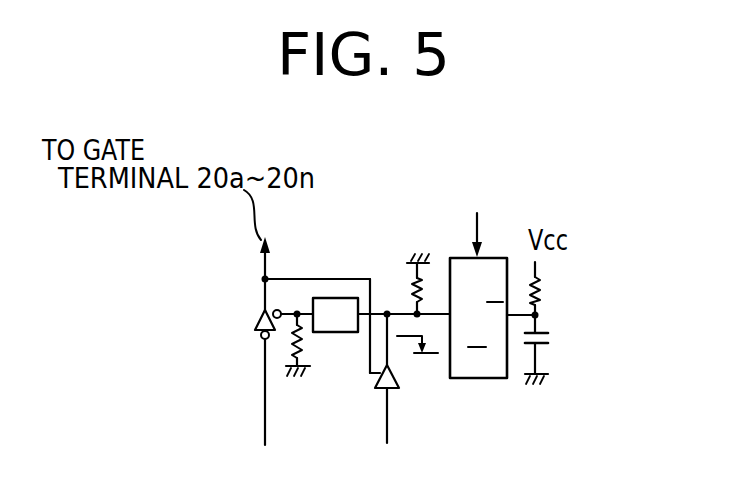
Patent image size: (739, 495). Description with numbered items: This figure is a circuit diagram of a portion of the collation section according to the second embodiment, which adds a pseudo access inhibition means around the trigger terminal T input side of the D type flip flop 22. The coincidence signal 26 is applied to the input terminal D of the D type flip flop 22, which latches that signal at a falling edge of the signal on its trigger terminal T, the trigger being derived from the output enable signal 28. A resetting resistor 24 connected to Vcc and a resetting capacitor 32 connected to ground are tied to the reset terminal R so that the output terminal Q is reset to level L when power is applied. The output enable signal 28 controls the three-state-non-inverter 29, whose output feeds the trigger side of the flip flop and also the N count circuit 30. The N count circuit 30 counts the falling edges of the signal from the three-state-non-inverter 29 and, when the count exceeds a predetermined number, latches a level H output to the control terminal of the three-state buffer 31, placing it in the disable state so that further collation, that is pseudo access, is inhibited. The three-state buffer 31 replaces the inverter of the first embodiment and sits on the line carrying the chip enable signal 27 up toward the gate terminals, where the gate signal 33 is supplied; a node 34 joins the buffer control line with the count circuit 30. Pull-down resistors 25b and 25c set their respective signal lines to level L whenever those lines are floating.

The D type flip flop 22 is at (506, 257).
The resetting resistor 24 is at (546, 290).
The pull-down resistor 25b is at (414, 272).
The pull-down resistor 25c is at (264, 343).
The coincidence signal 26 is at (471, 228).
The chip enable signal 27 is at (264, 420).
The output enable signal 28 is at (388, 427).
The three-state-non-inverter 29 is at (399, 384).
The N count circuit 30 is at (340, 297).
The three-state buffer 31 is at (257, 320).
The resetting capacitor 32 is at (549, 339).
The gate signal 33 is at (262, 265).
The junction node 34 is at (297, 311).